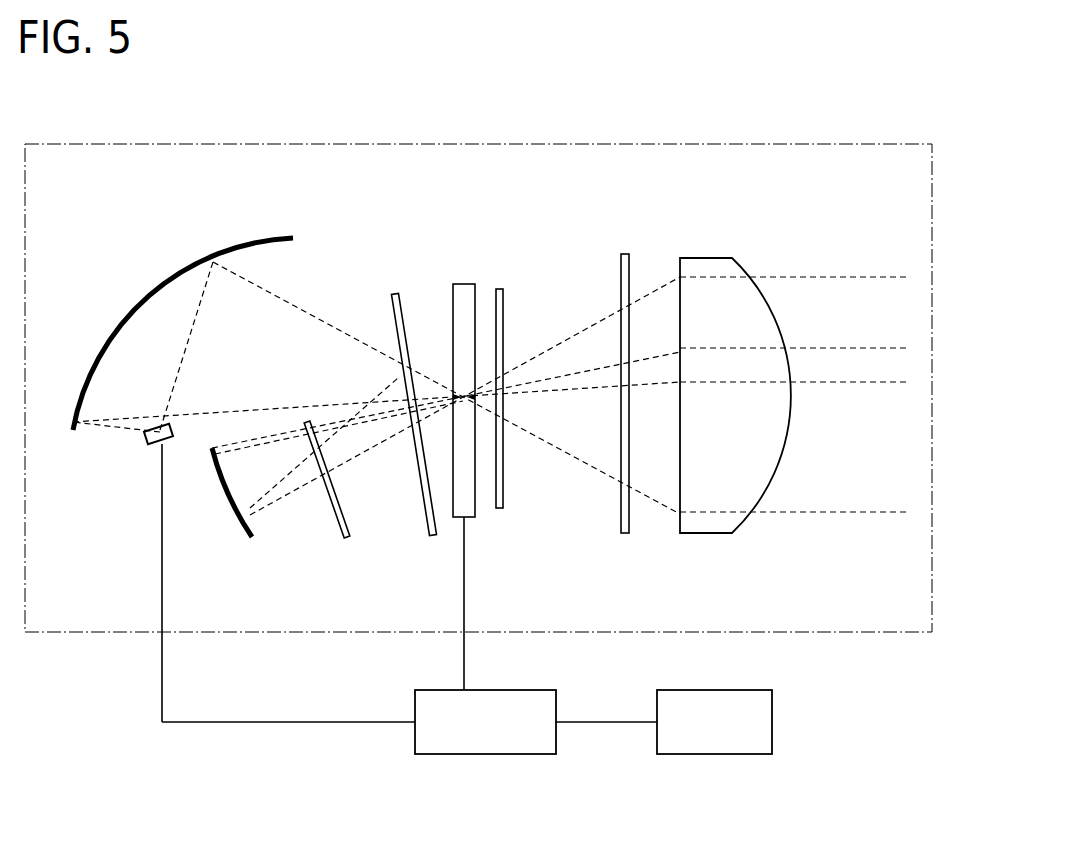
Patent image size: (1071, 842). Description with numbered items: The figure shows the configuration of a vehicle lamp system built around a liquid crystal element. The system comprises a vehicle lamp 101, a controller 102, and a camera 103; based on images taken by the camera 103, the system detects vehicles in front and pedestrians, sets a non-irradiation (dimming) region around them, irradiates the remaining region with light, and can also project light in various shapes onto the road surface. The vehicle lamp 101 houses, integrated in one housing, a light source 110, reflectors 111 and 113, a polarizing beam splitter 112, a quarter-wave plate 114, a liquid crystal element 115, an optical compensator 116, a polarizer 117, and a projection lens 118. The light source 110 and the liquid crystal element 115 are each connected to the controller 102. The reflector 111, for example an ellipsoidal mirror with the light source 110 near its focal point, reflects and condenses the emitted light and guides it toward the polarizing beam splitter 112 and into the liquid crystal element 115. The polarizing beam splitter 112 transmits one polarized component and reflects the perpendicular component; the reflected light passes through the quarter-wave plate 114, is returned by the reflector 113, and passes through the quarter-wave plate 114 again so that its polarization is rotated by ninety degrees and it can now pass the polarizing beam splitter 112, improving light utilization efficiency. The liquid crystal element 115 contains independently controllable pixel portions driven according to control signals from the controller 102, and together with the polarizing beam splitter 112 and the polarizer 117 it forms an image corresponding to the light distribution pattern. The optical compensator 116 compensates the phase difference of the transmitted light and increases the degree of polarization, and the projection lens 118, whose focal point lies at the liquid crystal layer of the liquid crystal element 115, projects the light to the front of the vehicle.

The vehicle lamp 101 is at (884, 634).
The controller 102 is at (510, 690).
The camera 103 is at (730, 690).
The light source 110 is at (147, 442).
The reflector 111 is at (253, 241).
The polarizing beam splitter 112 is at (395, 292).
The reflector 113 is at (251, 538).
The quarter-wave plate 114 is at (347, 538).
The liquid crystal element 115 is at (463, 283).
The optical compensator 116 is at (500, 288).
The polarizer 117 is at (627, 252).
The projection lens 118 is at (705, 258).